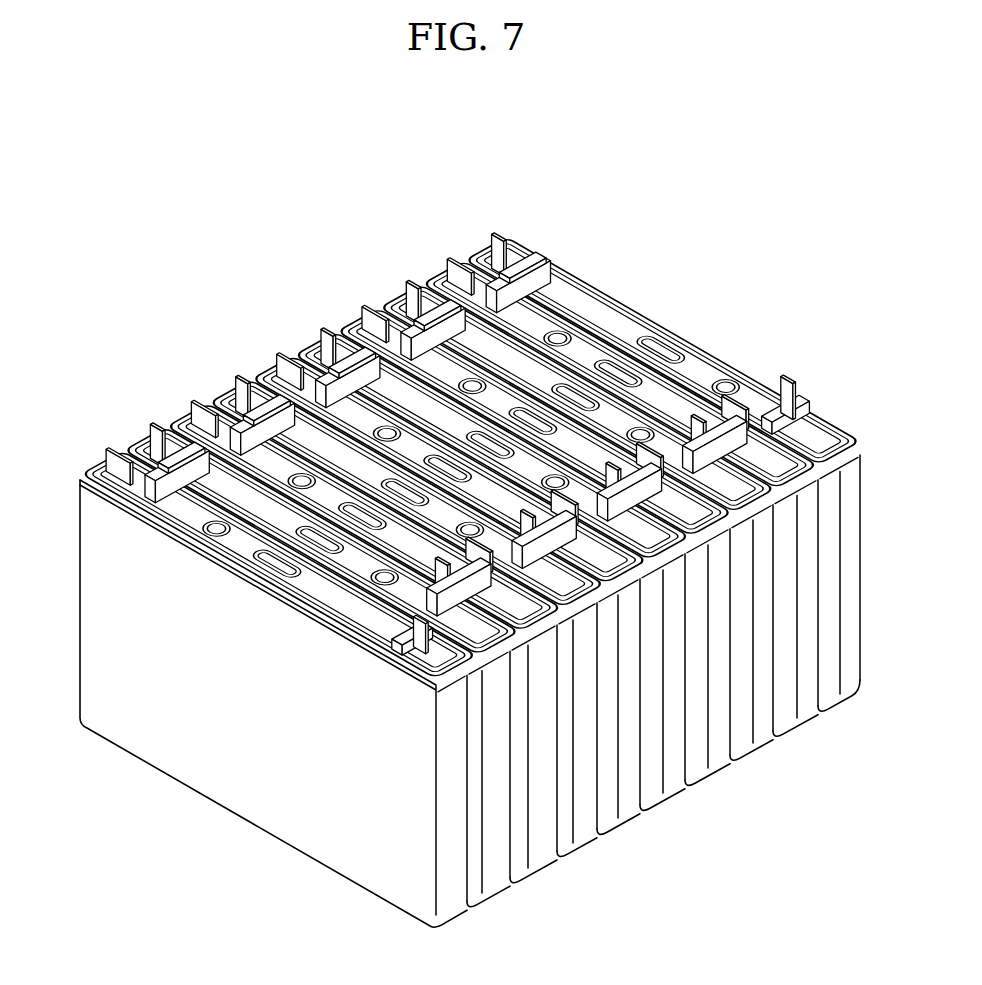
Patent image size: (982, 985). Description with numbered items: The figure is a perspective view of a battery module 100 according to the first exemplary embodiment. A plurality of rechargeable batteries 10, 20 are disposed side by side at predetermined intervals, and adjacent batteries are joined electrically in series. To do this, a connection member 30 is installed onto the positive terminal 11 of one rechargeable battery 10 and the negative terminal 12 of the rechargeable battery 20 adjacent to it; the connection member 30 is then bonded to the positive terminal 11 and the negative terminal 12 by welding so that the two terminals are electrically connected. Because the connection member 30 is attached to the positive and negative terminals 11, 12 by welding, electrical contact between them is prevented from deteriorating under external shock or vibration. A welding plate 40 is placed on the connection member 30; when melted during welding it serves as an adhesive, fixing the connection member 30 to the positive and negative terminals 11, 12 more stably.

The battery module 100 is at (336, 238).
The rechargeable battery 10 is at (450, 914).
The rechargeable battery 20 is at (495, 888).
The positive terminal 11 is at (105, 461).
The negative terminal 12 is at (153, 450).
The connection member 30 is at (173, 495).
The welding plate 40 is at (176, 460).